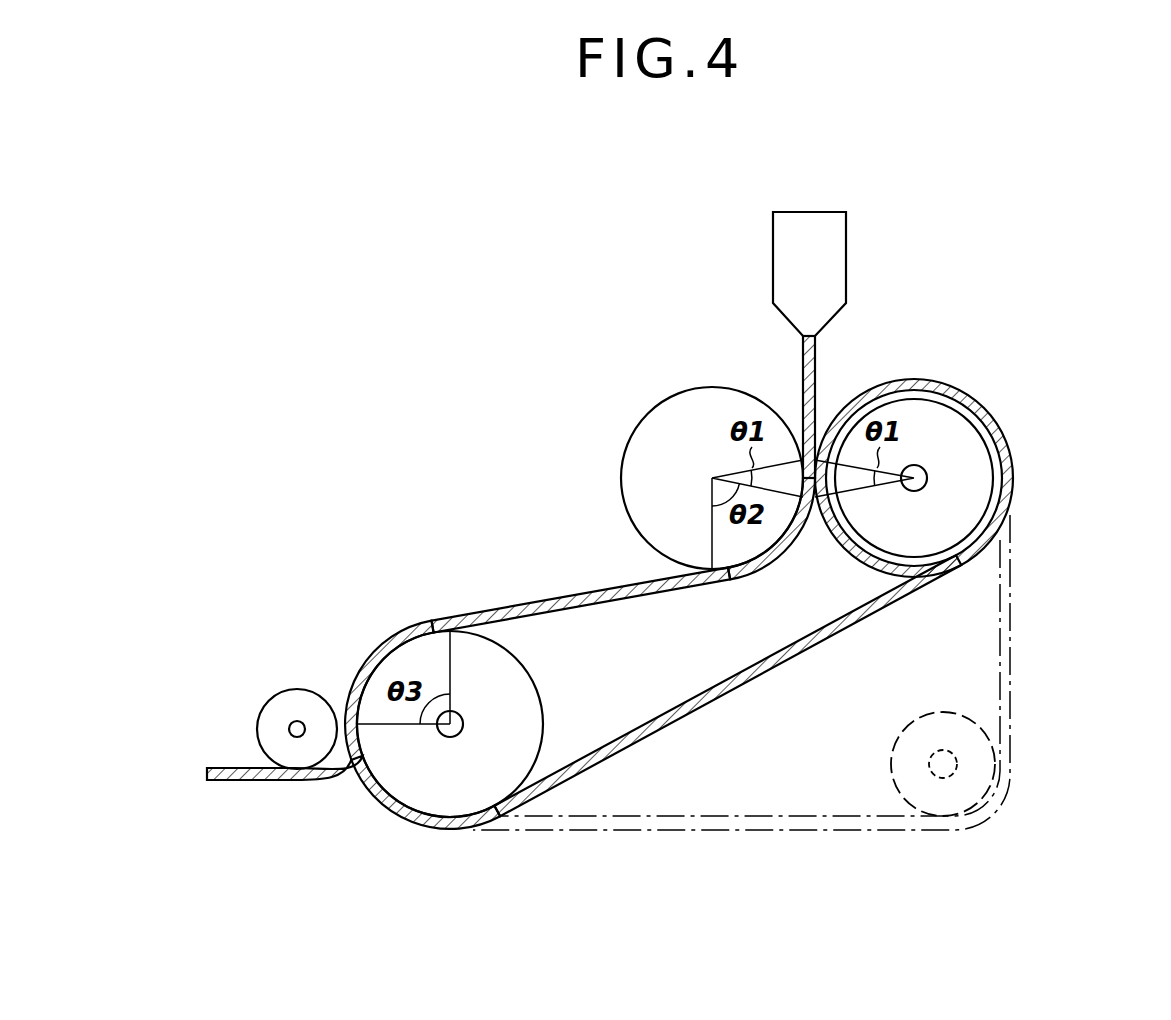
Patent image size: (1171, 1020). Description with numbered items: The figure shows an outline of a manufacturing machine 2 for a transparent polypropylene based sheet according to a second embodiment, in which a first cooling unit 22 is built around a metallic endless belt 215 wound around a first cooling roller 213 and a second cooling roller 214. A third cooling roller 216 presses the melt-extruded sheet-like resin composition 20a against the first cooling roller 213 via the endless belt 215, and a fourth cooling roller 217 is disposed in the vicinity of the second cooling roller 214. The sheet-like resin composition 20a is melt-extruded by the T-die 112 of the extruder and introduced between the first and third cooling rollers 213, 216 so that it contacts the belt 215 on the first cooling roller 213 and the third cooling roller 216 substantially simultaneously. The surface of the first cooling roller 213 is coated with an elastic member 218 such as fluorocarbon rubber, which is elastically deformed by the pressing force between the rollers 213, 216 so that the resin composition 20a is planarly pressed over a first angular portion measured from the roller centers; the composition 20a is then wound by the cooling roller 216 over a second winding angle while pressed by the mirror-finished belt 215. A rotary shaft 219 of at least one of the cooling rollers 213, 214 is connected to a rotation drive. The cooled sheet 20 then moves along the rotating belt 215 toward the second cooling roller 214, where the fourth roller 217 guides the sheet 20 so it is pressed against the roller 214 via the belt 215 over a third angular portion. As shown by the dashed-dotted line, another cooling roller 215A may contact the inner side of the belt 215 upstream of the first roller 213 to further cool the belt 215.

The manufacturing machine 2 is at (1056, 244).
The T-die 112 is at (832, 266).
The first cooling unit 22 is at (766, 386).
The sheet-like resin composition 20a is at (815, 366).
The third cooling roller 216 is at (680, 415).
The first cooling roller 213 is at (965, 453).
The elastic member 218 is at (947, 390).
The rotary shaft 219 is at (925, 480).
The second cooling roller 214 is at (466, 782).
The fourth cooling roller 217 is at (290, 705).
The sheet 20 is at (560, 583).
The metallic endless belt 215 is at (745, 670).
The another cooling roller 215A is at (885, 762).